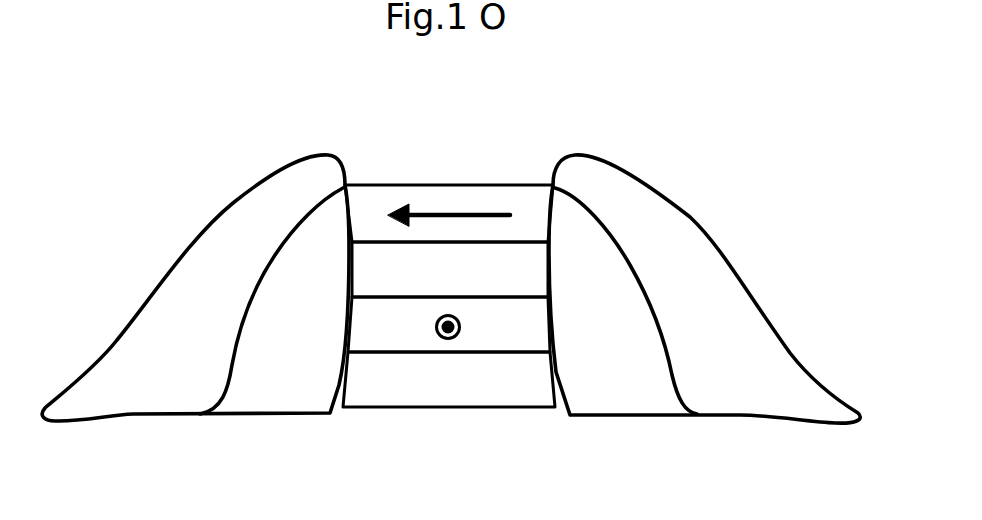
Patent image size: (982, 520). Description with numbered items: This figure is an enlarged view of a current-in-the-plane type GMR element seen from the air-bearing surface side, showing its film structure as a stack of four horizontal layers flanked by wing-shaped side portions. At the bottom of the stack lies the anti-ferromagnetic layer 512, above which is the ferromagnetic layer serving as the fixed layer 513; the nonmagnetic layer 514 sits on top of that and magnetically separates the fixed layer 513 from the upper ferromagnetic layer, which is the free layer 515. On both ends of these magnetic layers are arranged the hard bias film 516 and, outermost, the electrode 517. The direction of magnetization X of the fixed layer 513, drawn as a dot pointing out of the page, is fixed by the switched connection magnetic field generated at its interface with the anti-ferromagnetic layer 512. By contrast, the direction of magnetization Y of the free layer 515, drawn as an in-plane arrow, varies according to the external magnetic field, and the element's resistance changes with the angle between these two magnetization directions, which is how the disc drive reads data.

The anti-ferromagnetic layer 512 is at (508, 402).
The ferromagnetic layer (fixed layer) 513 is at (408, 340).
The nonmagnetic layer 514 is at (363, 285).
The ferromagnetic layer (free layer) 515 is at (381, 193).
The hard bias film 516 is at (265, 402).
The electrode 517 is at (128, 402).
The direction of magnetization of fixed layer X is at (448, 339).
The direction of magnetization of free layer Y is at (458, 215).